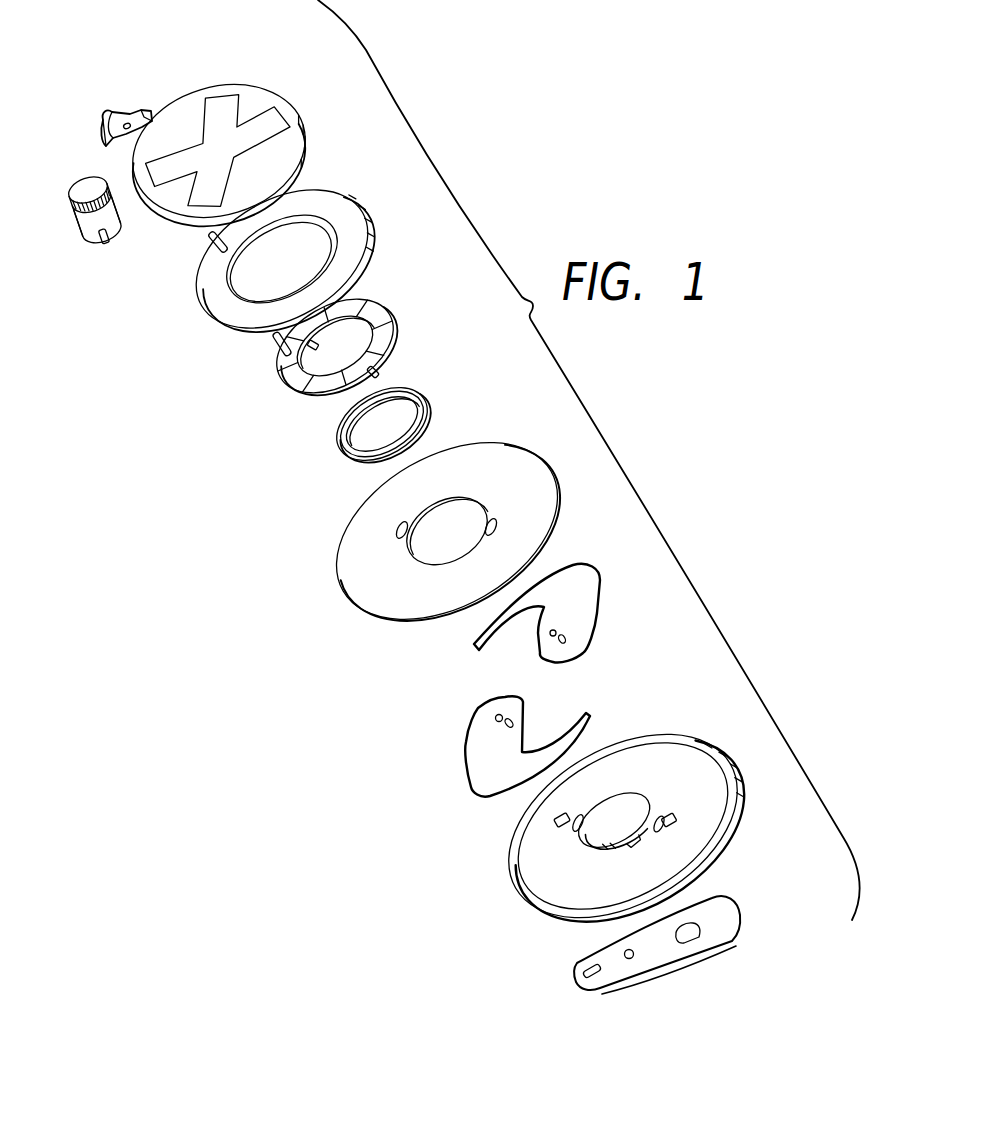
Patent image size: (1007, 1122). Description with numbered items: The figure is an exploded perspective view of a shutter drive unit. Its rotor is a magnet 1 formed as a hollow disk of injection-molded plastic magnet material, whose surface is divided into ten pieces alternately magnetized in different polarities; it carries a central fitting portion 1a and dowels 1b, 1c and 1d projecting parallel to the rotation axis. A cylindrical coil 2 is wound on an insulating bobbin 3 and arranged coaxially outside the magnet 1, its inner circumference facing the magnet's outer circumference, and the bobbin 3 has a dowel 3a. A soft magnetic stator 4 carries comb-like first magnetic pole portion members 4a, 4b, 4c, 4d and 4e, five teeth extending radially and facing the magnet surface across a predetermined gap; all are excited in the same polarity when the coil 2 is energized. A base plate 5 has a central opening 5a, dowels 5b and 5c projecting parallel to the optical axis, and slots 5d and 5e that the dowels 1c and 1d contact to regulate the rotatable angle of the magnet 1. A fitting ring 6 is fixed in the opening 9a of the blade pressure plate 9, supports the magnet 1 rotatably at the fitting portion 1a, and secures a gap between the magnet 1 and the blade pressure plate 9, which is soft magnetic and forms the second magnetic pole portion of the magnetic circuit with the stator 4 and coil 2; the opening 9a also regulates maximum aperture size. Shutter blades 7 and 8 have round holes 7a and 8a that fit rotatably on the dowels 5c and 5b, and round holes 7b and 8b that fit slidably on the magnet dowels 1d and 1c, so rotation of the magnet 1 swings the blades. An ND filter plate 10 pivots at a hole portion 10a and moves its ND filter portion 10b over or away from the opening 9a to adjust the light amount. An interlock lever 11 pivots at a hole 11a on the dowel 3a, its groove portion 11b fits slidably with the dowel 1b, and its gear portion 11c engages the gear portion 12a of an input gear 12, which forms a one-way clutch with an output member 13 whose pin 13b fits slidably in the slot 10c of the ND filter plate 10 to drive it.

The magnet 1 is at (333, 333).
The central fitting portion 1a is at (298, 378).
The dowel 1b is at (280, 340).
The dowel 1c is at (378, 370).
The dowel 1d is at (318, 345).
The coil 2 is at (294, 260).
The bobbin 3 is at (282, 259).
The dowel 3a is at (216, 253).
The stator 4 is at (238, 160).
The magnetic pole portion member 4a is at (218, 151).
The magnetic pole portion member 4b is at (192, 115).
The magnetic pole portion member 4c is at (147, 190).
The magnetic pole portion member 4d is at (200, 195).
The magnetic pole portion member 4e is at (270, 148).
The base plate 5 is at (608, 831).
The opening 5a is at (600, 847).
The dowel 5b is at (665, 810).
The dowel 5c is at (557, 815).
The slot 5d is at (666, 812).
The slot 5e is at (558, 852).
The fitting ring 6 is at (428, 400).
The shutter blade 7 is at (500, 744).
The round hole 7a is at (499, 718).
The round hole 7b is at (509, 722).
The shutter blade 8 is at (558, 593).
The round hole 8a is at (565, 640).
The round hole 8b is at (551, 635).
The blade pressure plate 9 is at (452, 527).
The opening 9a is at (470, 498).
The ND filter plate 10 is at (644, 965).
The hole portion 10a is at (631, 959).
The ND filter portion 10b is at (731, 930).
The slot 10c is at (583, 971).
The interlock lever 11 is at (111, 93).
The hole 11a is at (128, 124).
The groove portion 11b is at (143, 117).
The gear portion 11c is at (105, 128).
The input gear 12 is at (75, 218).
The gear portion 12a is at (92, 202).
The output member 13 is at (99, 223).
The pin 13b is at (103, 237).